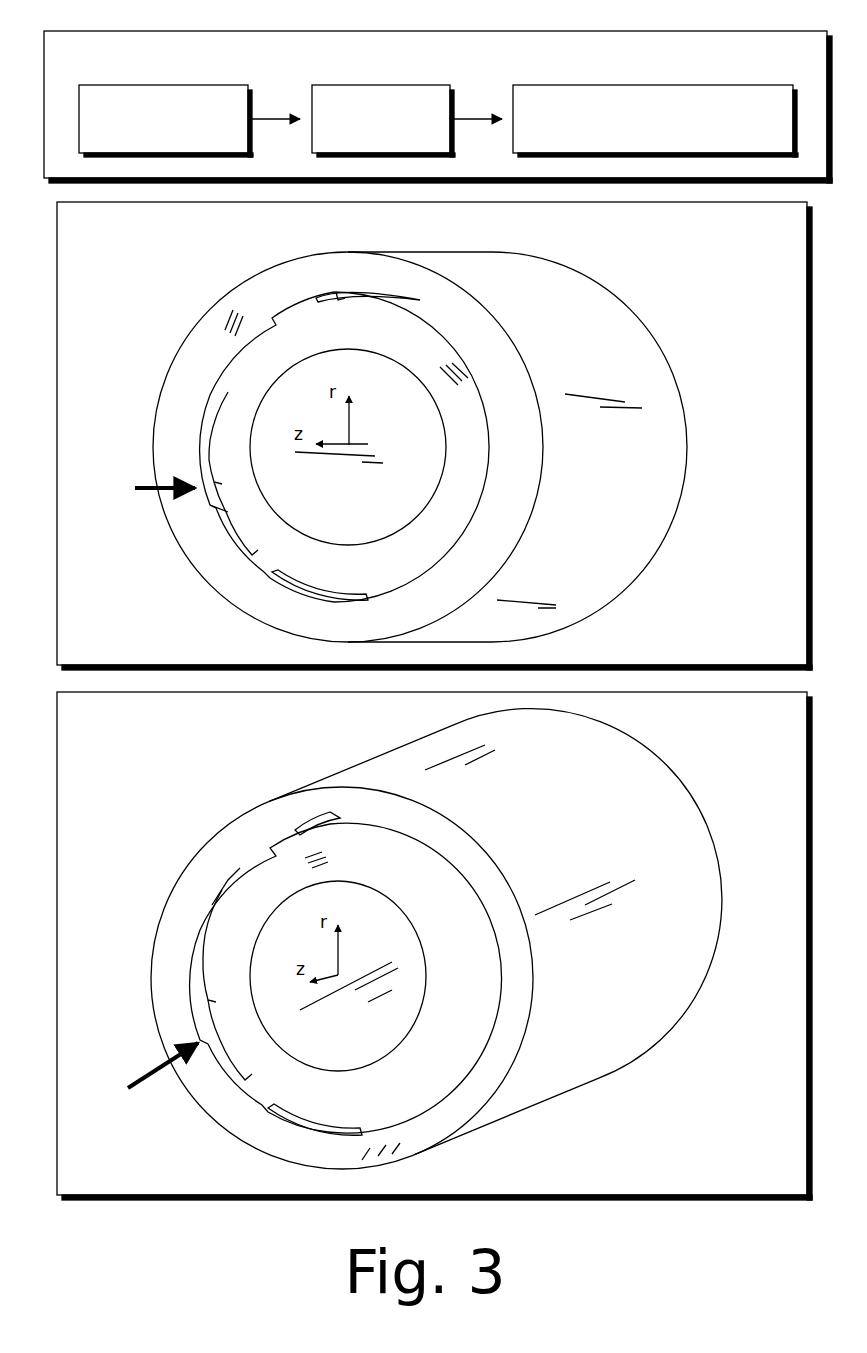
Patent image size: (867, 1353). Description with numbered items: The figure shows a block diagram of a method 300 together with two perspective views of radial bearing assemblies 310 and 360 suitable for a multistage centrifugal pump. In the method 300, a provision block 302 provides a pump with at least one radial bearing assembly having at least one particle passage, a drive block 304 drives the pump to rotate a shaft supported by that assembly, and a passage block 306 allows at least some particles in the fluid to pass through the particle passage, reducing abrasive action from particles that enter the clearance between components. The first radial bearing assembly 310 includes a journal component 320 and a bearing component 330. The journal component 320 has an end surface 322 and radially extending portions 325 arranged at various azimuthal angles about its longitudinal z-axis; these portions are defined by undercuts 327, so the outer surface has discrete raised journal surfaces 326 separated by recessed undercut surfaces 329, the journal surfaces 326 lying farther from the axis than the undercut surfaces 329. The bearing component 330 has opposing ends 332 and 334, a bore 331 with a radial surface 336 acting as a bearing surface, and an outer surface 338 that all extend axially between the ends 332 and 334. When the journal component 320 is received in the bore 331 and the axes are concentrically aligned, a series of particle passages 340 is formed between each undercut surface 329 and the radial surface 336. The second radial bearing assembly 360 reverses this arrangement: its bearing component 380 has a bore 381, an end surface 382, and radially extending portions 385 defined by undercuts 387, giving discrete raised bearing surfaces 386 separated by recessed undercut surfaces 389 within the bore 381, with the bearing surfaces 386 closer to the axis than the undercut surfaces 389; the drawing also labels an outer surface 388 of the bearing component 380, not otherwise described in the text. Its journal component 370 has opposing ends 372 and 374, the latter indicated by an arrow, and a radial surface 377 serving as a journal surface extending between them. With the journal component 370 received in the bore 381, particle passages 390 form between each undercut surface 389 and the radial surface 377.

The method 300 is at (438, 107).
The provision block 302 is at (166, 121).
The drive block 304 is at (383, 121).
The passage block 306 is at (655, 121).
The radial bearing assembly 310 is at (650, 246).
The journal component 320 is at (232, 370).
The end surface 322 is at (348, 464).
The radially extending portions 325 is at (215, 418).
The journal surfaces 326 is at (208, 440).
The undercuts 327 is at (212, 460).
The undercut surfaces 329 is at (212, 478).
The bearing component 330 is at (268, 268).
The bore 331 is at (272, 584).
The end 332 is at (368, 265).
The end 334 is at (655, 330).
The radial surface 336 is at (222, 524).
The outer surface 338 is at (516, 355).
The particle passages 340 is at (218, 508).
The radial bearing assembly 360 is at (655, 732).
The journal component 370 is at (243, 850).
The end 372 is at (338, 995).
The end 374 is at (697, 815).
The radial surface 377 is at (228, 872).
The bearing component 380 is at (283, 790).
The bore 381 is at (272, 1120).
The end surface 382 is at (322, 805).
The radially extending portions 385 is at (205, 950).
The bearing surfaces 386 is at (200, 920).
The undercuts 387 is at (200, 975).
The housing outer wall 388 is at (451, 837).
The undercut surfaces 389 is at (198, 1018).
The particle passages 390 is at (222, 1050).